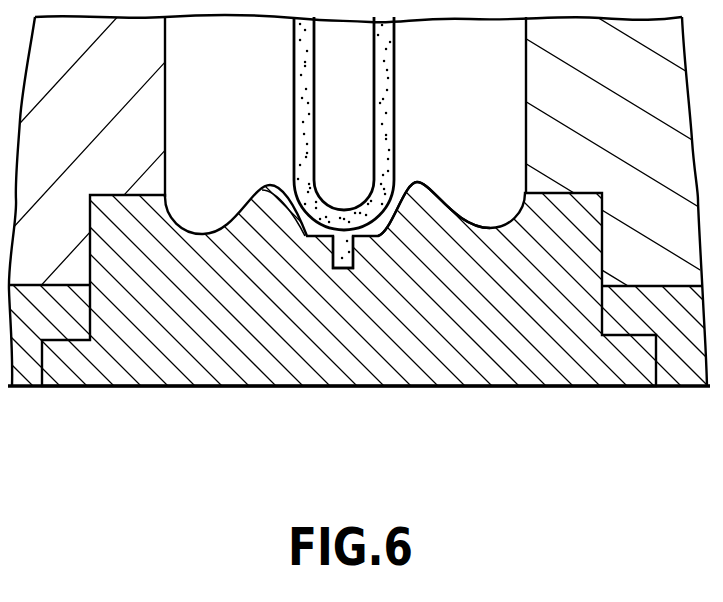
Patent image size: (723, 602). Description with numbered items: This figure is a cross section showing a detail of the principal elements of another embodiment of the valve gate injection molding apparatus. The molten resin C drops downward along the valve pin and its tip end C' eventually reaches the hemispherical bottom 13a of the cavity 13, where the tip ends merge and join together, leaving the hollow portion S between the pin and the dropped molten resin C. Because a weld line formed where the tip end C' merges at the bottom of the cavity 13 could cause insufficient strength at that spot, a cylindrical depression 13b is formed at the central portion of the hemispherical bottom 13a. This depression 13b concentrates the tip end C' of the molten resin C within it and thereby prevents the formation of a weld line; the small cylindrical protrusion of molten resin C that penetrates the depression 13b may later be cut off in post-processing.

The cavity 13 is at (243, 87).
The hemispherical bottom 13a is at (400, 192).
The cylindrical depression 13b is at (351, 256).
The molten resin C is at (379, 137).
The tip end C' is at (265, 191).
The hollow portion S is at (357, 87).